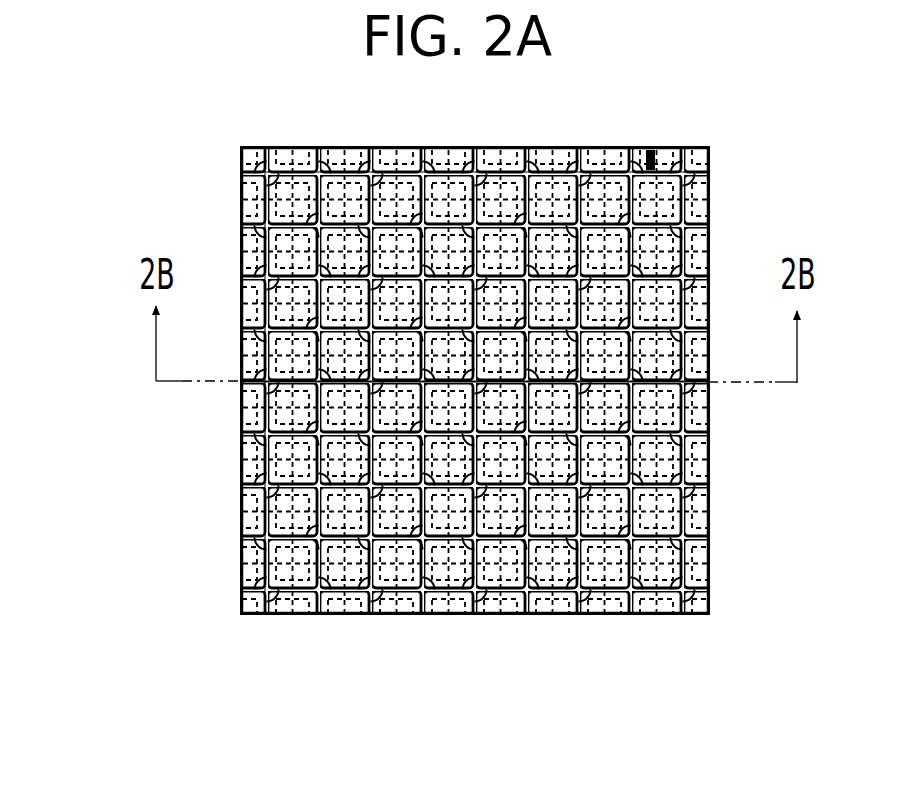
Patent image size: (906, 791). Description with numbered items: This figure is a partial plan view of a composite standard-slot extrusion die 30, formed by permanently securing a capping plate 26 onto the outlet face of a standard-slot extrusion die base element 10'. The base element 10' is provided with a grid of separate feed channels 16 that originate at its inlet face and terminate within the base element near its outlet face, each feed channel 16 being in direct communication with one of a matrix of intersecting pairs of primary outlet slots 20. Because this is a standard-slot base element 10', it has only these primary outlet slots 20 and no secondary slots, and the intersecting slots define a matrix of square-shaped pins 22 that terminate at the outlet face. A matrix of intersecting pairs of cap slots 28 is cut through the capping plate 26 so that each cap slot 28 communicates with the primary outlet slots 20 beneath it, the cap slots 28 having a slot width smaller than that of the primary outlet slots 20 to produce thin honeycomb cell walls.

The standard-slot extrusion die base element 10' is at (415, 381).
The feed channels 16 is at (466, 429).
The primary outlet slots 20 is at (475, 419).
The pins 22 is at (500, 339).
The capping plate 26 is at (660, 119).
The cap slots 28 is at (507, 450).
The composite extrusion die 30 is at (361, 380).